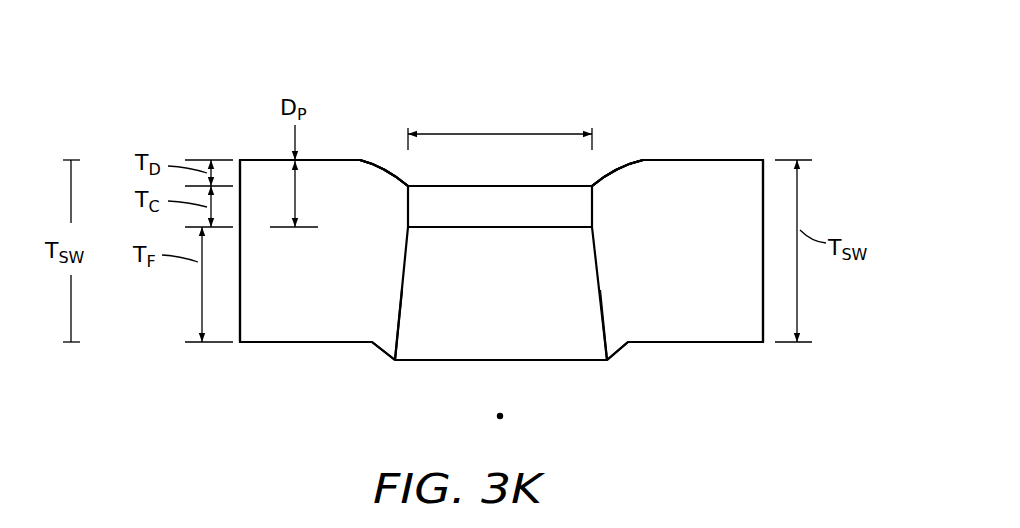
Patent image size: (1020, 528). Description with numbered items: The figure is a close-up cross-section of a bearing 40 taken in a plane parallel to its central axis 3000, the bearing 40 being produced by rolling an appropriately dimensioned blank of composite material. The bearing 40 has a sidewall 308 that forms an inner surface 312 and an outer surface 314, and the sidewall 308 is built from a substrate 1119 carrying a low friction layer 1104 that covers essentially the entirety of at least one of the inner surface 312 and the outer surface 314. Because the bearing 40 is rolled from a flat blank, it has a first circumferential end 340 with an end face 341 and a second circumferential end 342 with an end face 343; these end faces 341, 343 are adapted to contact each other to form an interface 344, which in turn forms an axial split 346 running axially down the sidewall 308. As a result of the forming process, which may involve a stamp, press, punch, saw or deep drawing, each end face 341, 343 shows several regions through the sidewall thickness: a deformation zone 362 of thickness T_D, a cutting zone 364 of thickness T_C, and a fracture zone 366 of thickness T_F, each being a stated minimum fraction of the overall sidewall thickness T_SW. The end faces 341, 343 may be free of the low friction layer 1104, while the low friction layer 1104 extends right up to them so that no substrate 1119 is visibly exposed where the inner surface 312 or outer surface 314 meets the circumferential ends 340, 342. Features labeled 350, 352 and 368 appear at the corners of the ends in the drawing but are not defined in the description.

The bearing 40 is at (784, 35).
The sidewall 308 is at (655, 344).
The inner surface 312 is at (766, 344).
The outer surface 314 is at (714, 158).
The first circumferential end 340 is at (641, 158).
The end face 341 is at (598, 256).
The second circumferential end 342 is at (341, 158).
The end face 343 is at (409, 255).
The interface 344 is at (552, 361).
The axial split 346 is at (521, 134).
The top corner 350 is at (651, 158).
The top corner 352 is at (314, 158).
The deformation zone 362 is at (393, 172).
The cutting zone 364 is at (410, 203).
The fracture zone 366 is at (402, 308).
The bottom corner 368 is at (395, 361).
The low friction layer 1104 is at (261, 158).
The substrate 1119 is at (501, 251).
The central axis 3000 is at (504, 419).